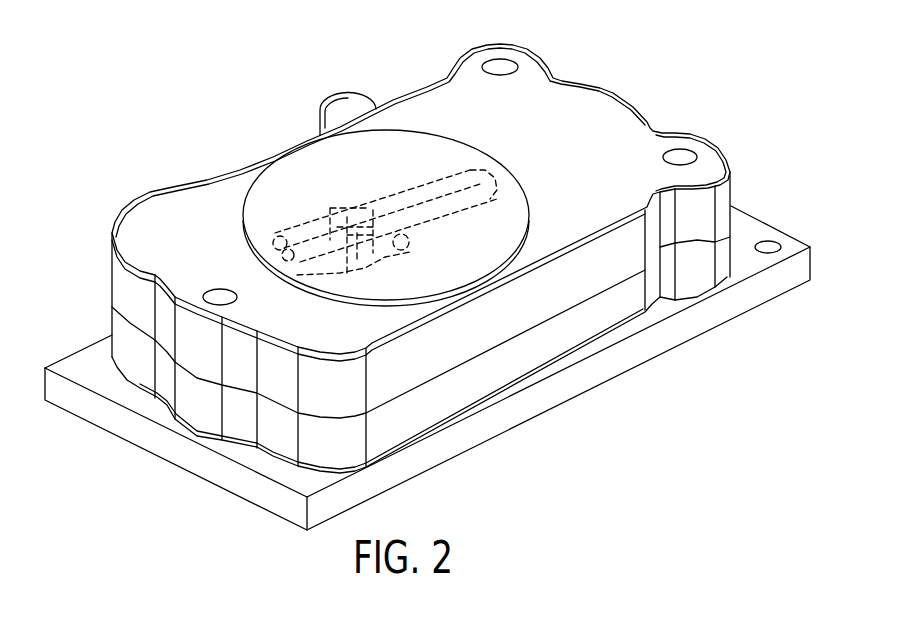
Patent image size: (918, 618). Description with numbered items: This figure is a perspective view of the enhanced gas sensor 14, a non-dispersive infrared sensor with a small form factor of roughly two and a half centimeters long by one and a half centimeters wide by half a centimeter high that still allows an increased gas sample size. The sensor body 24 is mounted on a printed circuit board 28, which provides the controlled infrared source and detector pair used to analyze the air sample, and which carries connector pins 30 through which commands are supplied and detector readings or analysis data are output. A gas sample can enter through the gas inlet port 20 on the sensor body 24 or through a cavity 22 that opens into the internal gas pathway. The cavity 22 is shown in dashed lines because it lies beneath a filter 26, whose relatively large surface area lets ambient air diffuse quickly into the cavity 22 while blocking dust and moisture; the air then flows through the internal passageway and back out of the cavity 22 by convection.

The enhanced gas sensor 14 is at (186, 122).
The gas inlet port 20 is at (323, 108).
The cavity 22 is at (349, 213).
The sensor body 24 is at (613, 105).
The filter 26 is at (440, 158).
The printed circuit board 28 is at (743, 262).
The connector pins 30 is at (768, 241).